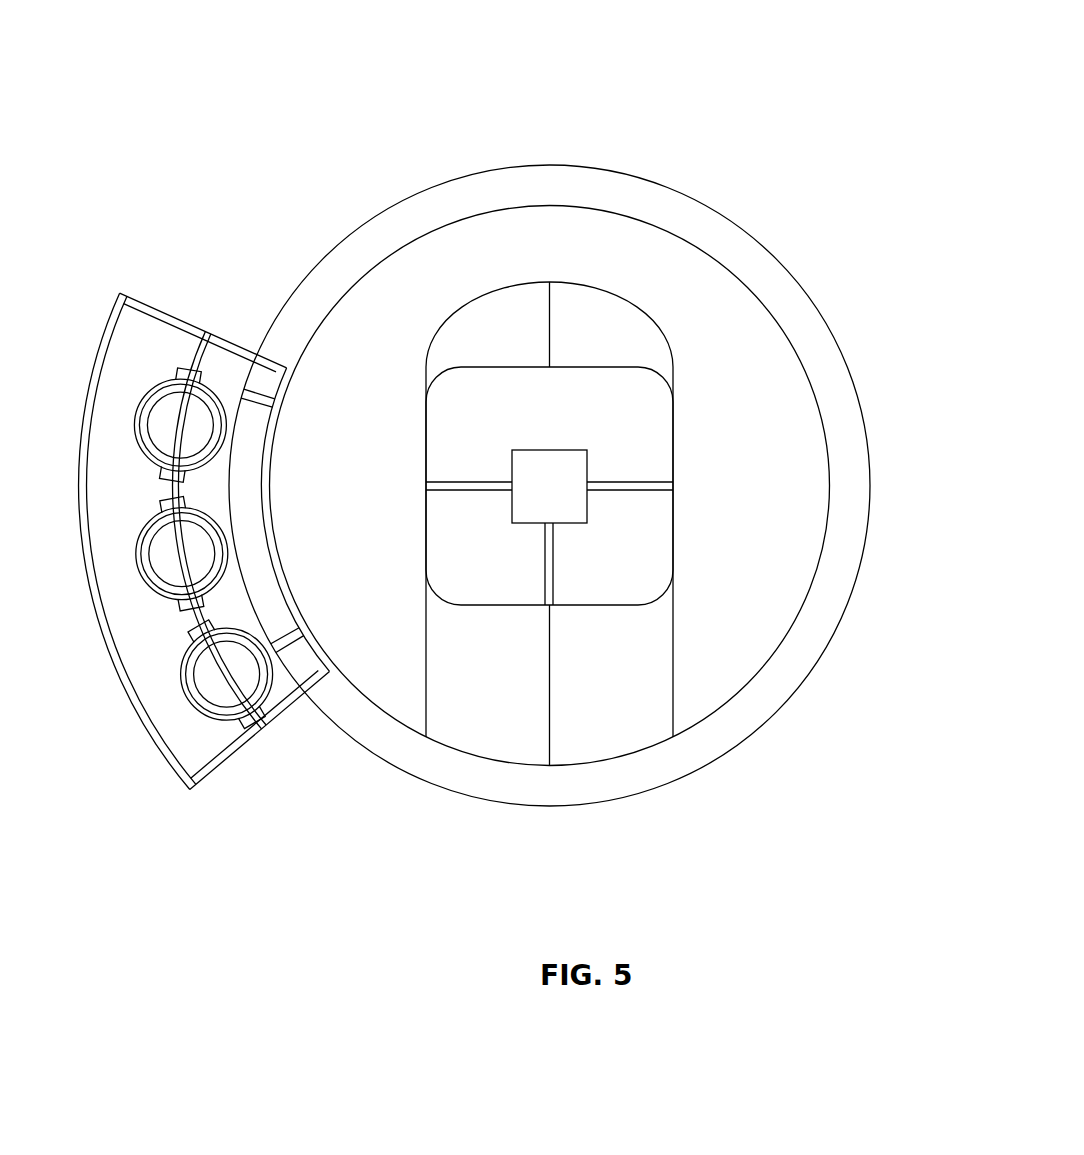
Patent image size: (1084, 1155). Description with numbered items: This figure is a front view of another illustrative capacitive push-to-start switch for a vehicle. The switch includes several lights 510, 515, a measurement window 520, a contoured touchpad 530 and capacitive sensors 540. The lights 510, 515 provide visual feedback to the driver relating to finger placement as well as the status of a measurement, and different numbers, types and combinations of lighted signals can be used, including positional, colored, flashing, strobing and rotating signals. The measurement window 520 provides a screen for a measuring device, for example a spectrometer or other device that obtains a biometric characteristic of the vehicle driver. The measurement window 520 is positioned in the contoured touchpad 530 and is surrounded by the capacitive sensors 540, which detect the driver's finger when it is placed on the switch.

The lights 510 is at (167, 415).
The lights 515 is at (393, 743).
The measurement window 520 is at (578, 512).
The touchpad 530 is at (650, 730).
The capacitive sensors 540 is at (648, 446).